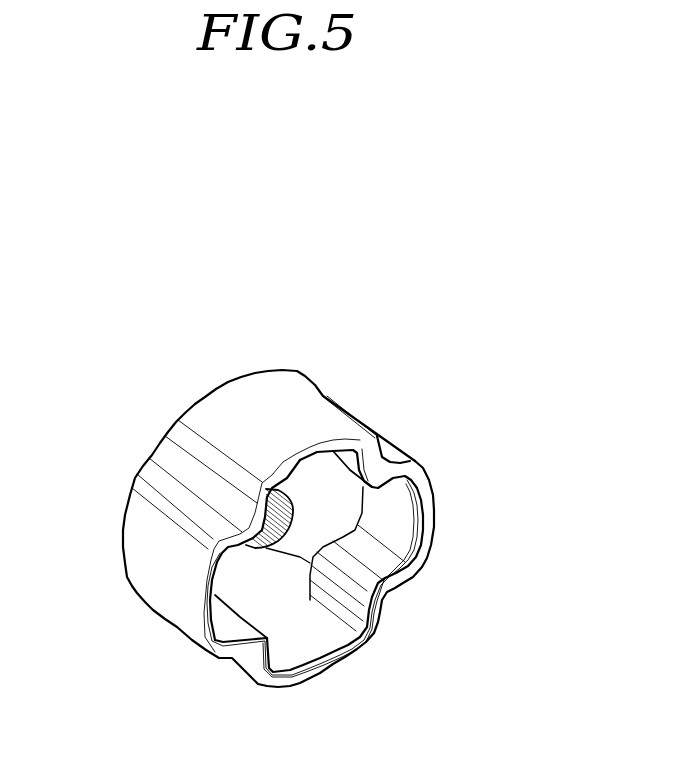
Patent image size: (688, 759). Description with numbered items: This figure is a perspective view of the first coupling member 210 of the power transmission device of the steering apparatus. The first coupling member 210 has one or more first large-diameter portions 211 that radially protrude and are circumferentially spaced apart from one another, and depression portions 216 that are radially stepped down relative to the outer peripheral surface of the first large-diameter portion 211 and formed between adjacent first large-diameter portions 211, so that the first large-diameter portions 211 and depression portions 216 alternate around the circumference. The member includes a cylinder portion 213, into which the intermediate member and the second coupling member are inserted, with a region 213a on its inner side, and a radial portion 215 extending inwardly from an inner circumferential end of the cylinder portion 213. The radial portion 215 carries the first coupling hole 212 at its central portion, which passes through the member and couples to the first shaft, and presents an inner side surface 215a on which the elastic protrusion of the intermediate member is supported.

The first coupling member 210 is at (83, 295).
The first large-diameter portion 211 is at (253, 403).
The first coupling hole 212 is at (266, 548).
The cylinder portion 213 is at (431, 501).
The chamfer edge 213a is at (410, 523).
The radial portion 215 is at (122, 557).
The inner side surface 215a is at (255, 595).
The depression portion 216 is at (172, 458).